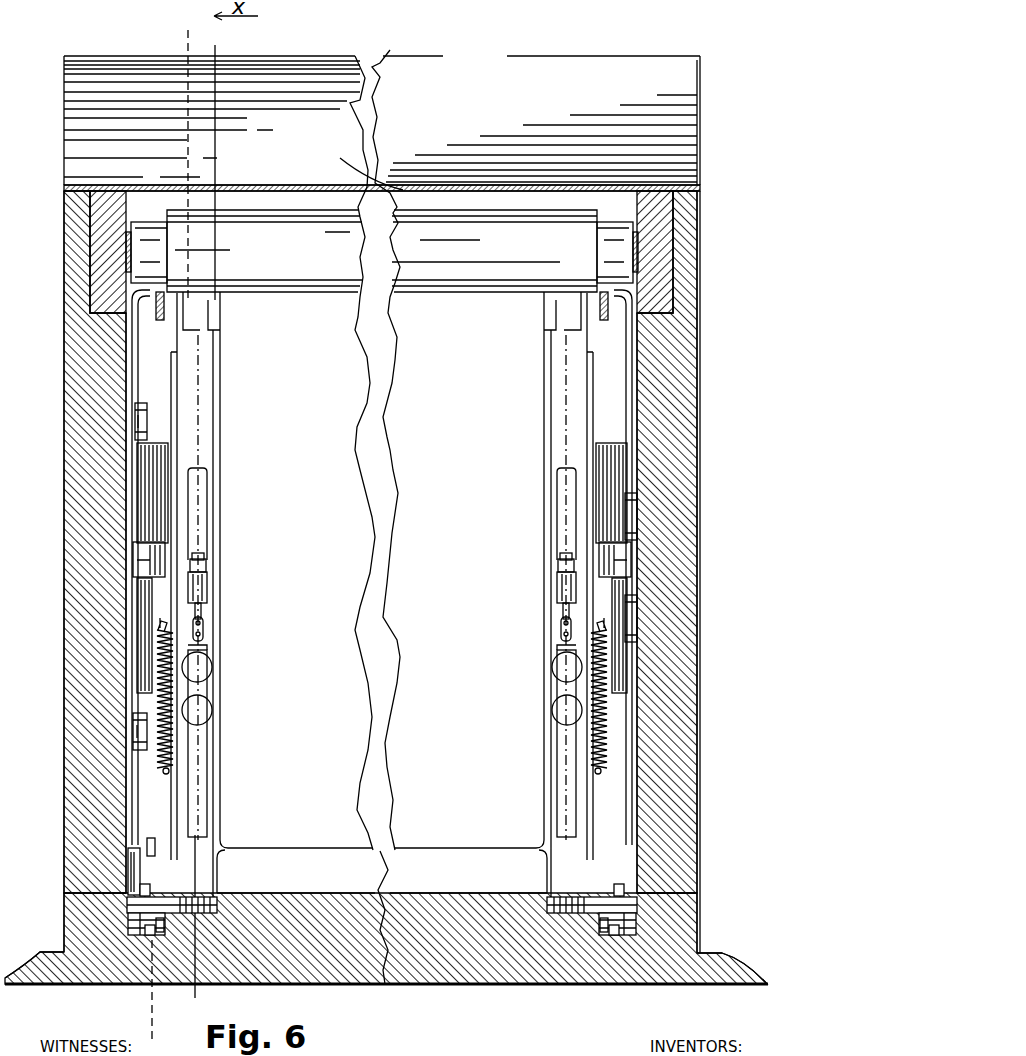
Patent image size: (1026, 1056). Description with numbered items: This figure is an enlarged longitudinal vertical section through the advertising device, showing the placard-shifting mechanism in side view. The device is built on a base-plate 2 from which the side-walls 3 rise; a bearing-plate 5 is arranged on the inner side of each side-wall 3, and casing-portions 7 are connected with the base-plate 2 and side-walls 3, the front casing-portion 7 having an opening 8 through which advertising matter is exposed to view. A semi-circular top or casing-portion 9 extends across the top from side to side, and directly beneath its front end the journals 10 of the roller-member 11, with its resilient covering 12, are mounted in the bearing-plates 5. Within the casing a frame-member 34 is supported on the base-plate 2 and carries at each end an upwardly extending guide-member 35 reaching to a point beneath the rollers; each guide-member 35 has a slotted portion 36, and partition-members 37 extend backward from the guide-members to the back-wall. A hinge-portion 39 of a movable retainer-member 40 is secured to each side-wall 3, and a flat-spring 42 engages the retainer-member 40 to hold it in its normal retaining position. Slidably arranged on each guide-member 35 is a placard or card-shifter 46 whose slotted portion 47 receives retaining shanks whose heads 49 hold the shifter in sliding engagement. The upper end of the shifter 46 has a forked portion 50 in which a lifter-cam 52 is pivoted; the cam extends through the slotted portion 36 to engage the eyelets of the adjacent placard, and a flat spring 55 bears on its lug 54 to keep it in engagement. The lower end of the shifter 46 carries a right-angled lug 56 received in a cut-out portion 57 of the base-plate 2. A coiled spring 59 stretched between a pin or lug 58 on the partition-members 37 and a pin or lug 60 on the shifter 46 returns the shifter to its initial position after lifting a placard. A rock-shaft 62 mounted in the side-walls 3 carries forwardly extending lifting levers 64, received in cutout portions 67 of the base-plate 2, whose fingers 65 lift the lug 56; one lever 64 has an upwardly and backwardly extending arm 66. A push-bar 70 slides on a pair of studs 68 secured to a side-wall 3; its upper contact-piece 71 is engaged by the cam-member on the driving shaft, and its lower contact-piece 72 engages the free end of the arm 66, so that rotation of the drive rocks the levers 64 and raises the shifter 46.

The base-plate 2 is at (345, 905).
The side-walls 3 is at (80, 378).
The bearing-plate 5 is at (105, 268).
The casing-portions 7 is at (320, 184).
The opening 8 is at (209, 515).
The semi-circular top or casing-portion 9 is at (350, 70).
The journals 10 is at (140, 250).
The roller-member 11 is at (132, 236).
The resilient covering 12 is at (382, 251).
The frame-member 34 is at (415, 858).
The guide-member 35 is at (214, 380).
The slotted portion 36 is at (208, 480).
The partition-members 37 is at (174, 380).
The hinge-portion 39 is at (637, 515).
The movable retainer-member 40 is at (158, 446).
The flat-spring 42 is at (133, 563).
The placard or card-shifter 46 is at (208, 630).
The slotted portion 47 is at (206, 770).
The heads 49 is at (202, 712).
The forked portion 50 is at (210, 580).
The lifter-cam 52 is at (206, 565).
The lug 54 is at (200, 553).
The flat spring 55 is at (204, 608).
The lug 56 is at (155, 905).
The cut-out portion 57 is at (232, 893).
The pin or lug 58 is at (158, 625).
The coiled spring 59 is at (160, 695).
The pin or lug 60 is at (164, 770).
The rock-shaft 62 is at (150, 935).
The lifting levers 64 is at (140, 892).
The fingers 65 is at (128, 925).
The arm 66 is at (128, 860).
The cutout portions 67 is at (160, 935).
The studs 68 is at (148, 408).
The push-bar 70 is at (133, 358).
The contact-piece 71 is at (160, 300).
The contact-piece 72 is at (150, 838).